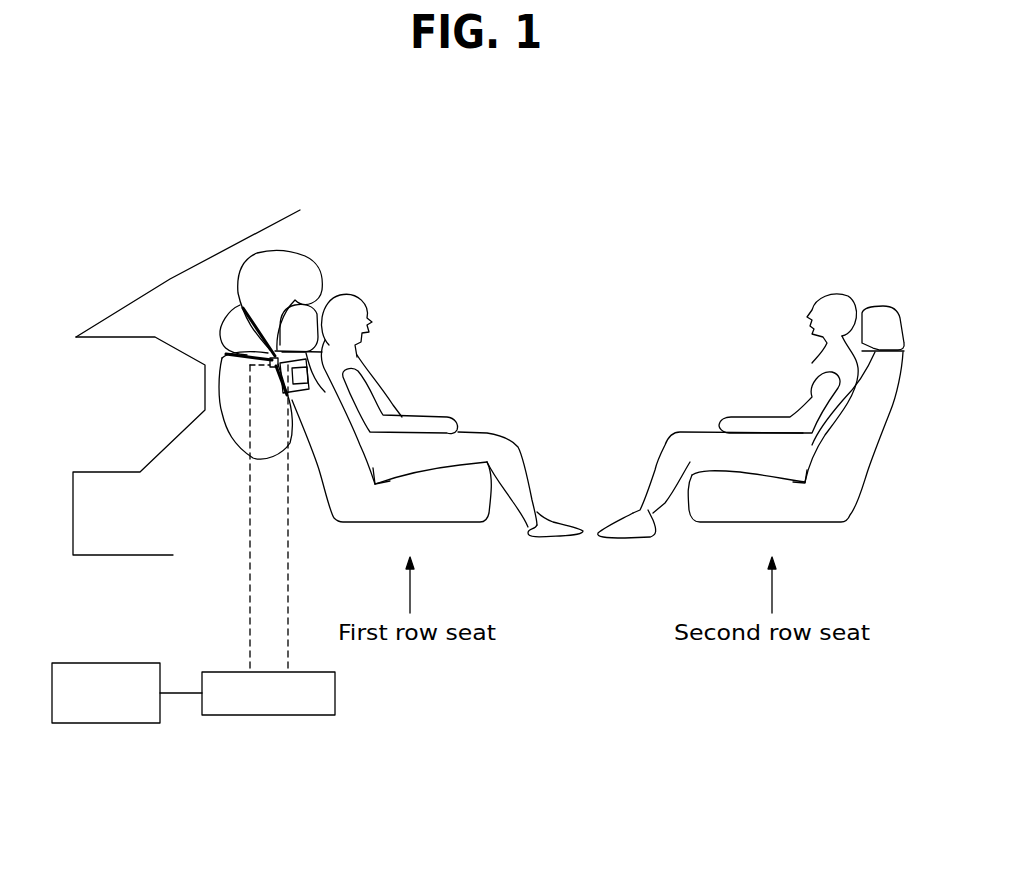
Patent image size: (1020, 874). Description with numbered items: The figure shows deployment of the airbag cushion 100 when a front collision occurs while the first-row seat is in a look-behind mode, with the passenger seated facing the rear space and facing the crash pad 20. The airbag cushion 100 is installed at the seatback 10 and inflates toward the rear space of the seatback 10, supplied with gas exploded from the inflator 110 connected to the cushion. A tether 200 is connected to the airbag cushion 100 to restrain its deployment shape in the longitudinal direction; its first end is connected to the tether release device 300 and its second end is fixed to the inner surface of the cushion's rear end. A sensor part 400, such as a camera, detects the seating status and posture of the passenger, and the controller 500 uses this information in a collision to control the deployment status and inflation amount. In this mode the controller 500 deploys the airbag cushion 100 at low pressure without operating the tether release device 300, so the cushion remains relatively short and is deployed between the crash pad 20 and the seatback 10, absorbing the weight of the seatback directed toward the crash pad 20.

The seatback 10 is at (343, 405).
The crash pad 20 is at (121, 350).
The airbag cushion 100 is at (298, 260).
The inflator 110 is at (280, 383).
The tether 200 is at (229, 353).
The tether release device 300 is at (275, 356).
The sensor part 400 is at (128, 725).
The controller 500 is at (297, 717).